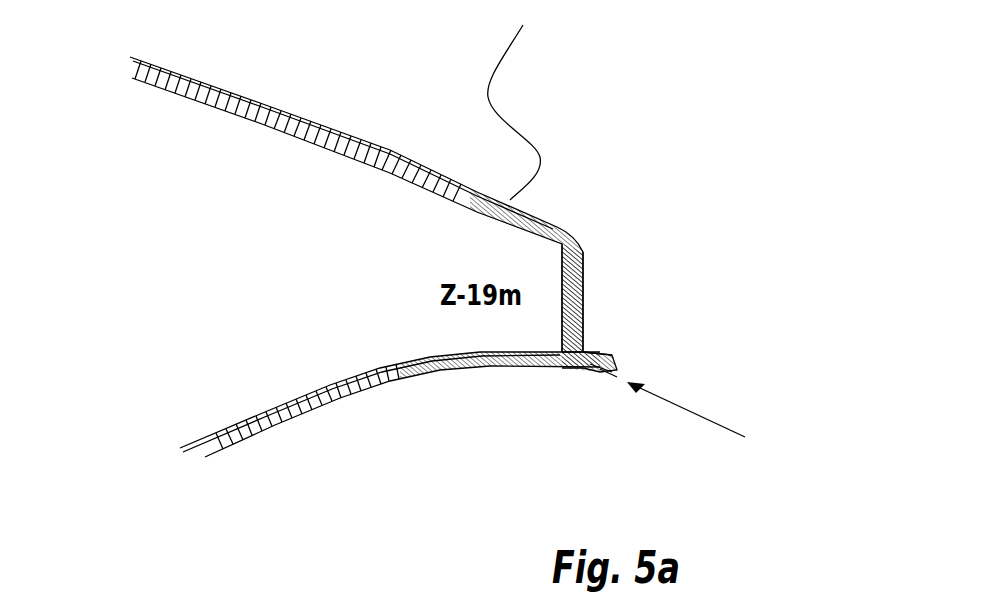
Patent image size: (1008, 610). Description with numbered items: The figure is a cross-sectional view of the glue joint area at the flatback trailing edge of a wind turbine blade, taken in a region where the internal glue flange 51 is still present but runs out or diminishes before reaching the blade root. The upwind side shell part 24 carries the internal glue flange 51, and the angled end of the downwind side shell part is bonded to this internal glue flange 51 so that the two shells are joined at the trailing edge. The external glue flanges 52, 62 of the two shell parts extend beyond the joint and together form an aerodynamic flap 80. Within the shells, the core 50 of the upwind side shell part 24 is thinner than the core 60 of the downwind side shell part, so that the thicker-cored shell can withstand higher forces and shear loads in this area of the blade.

The upwind side shell part 24 is at (450, 370).
The core 50 is at (487, 350).
The internal glue flange 51 is at (560, 312).
The external glue flange 52 is at (592, 375).
The core 60 is at (570, 248).
The external glue flange 62 is at (600, 360).
The aerodynamic flap 80 is at (709, 420).